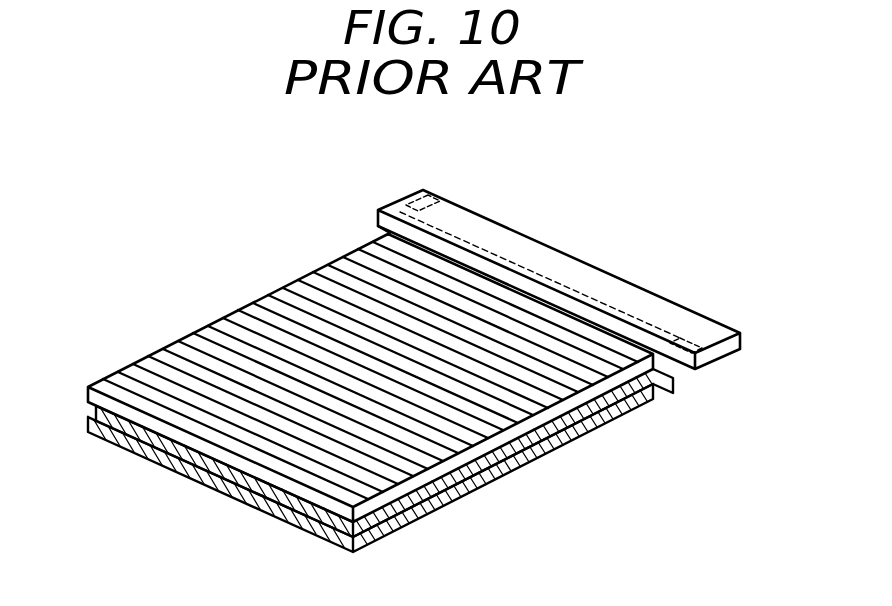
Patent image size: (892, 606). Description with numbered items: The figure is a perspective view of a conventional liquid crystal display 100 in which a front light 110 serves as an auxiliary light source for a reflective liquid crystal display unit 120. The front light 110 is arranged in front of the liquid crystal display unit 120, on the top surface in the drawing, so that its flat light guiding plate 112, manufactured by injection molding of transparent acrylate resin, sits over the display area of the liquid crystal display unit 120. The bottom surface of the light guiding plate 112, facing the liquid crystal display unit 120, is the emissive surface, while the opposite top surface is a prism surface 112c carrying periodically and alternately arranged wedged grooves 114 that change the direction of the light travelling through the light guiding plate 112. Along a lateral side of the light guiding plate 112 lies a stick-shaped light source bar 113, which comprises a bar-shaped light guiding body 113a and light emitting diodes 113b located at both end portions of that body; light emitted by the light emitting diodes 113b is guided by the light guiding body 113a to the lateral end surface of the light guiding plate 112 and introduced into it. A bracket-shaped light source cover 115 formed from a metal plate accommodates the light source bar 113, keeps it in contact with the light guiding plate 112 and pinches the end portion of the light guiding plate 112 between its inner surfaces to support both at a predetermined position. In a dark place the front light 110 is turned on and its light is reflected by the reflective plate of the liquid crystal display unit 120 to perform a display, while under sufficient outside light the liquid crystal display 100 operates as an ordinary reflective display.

The liquid crystal display 100 is at (238, 306).
The front light 110 is at (92, 386).
The light guiding plate 112 is at (583, 410).
The prism surface 112c is at (386, 234).
The light source bar 113 is at (684, 307).
The light guiding body 113a is at (535, 262).
The light emitting diodes 113b is at (428, 190).
The wedged grooves 114 is at (233, 352).
The light source cover 115 is at (688, 292).
The liquid crystal display unit 120 is at (530, 455).